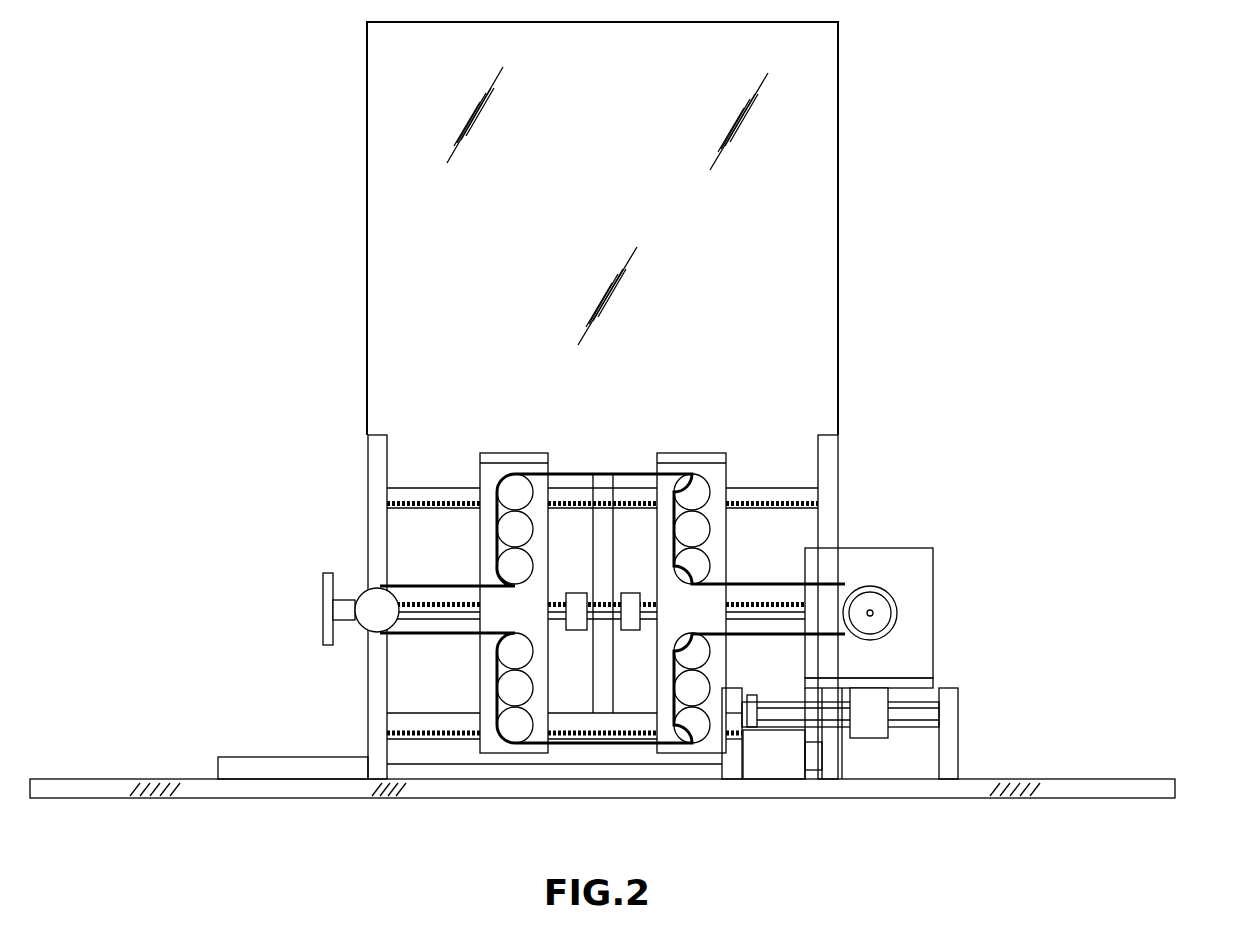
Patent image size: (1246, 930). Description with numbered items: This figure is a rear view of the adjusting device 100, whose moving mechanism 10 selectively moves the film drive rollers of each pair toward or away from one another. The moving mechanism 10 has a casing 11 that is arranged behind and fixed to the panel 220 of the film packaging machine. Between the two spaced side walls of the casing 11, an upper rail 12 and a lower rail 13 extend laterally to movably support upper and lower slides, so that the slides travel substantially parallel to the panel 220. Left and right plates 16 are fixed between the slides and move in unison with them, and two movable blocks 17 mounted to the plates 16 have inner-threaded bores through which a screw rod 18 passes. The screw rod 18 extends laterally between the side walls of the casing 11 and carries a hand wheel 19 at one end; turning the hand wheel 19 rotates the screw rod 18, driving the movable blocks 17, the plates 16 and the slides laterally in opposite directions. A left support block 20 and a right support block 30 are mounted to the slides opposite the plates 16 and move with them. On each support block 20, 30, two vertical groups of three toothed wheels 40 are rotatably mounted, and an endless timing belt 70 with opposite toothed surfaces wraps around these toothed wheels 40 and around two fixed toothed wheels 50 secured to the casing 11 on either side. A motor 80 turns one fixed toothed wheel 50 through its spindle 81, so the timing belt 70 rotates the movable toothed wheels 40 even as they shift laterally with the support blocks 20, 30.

The moving mechanism 10 is at (882, 473).
The casing 11 is at (378, 498).
The upper rail 12 is at (603, 500).
The lower rail 13 is at (416, 722).
The plates 16 is at (572, 480).
The movable blocks 17 is at (576, 630).
The screw rod 18 is at (428, 607).
The hand wheel 19 is at (323, 605).
The left support block 20 is at (487, 478).
The right support block 30 is at (713, 475).
The toothed wheels 40 is at (513, 487).
The fixed toothed wheels 50 is at (372, 620).
The timing belt 70 is at (768, 637).
The motor 80 is at (905, 565).
The spindle 81 is at (897, 622).
The adjusting device 100 is at (1128, 387).
The panel 220 is at (807, 128).